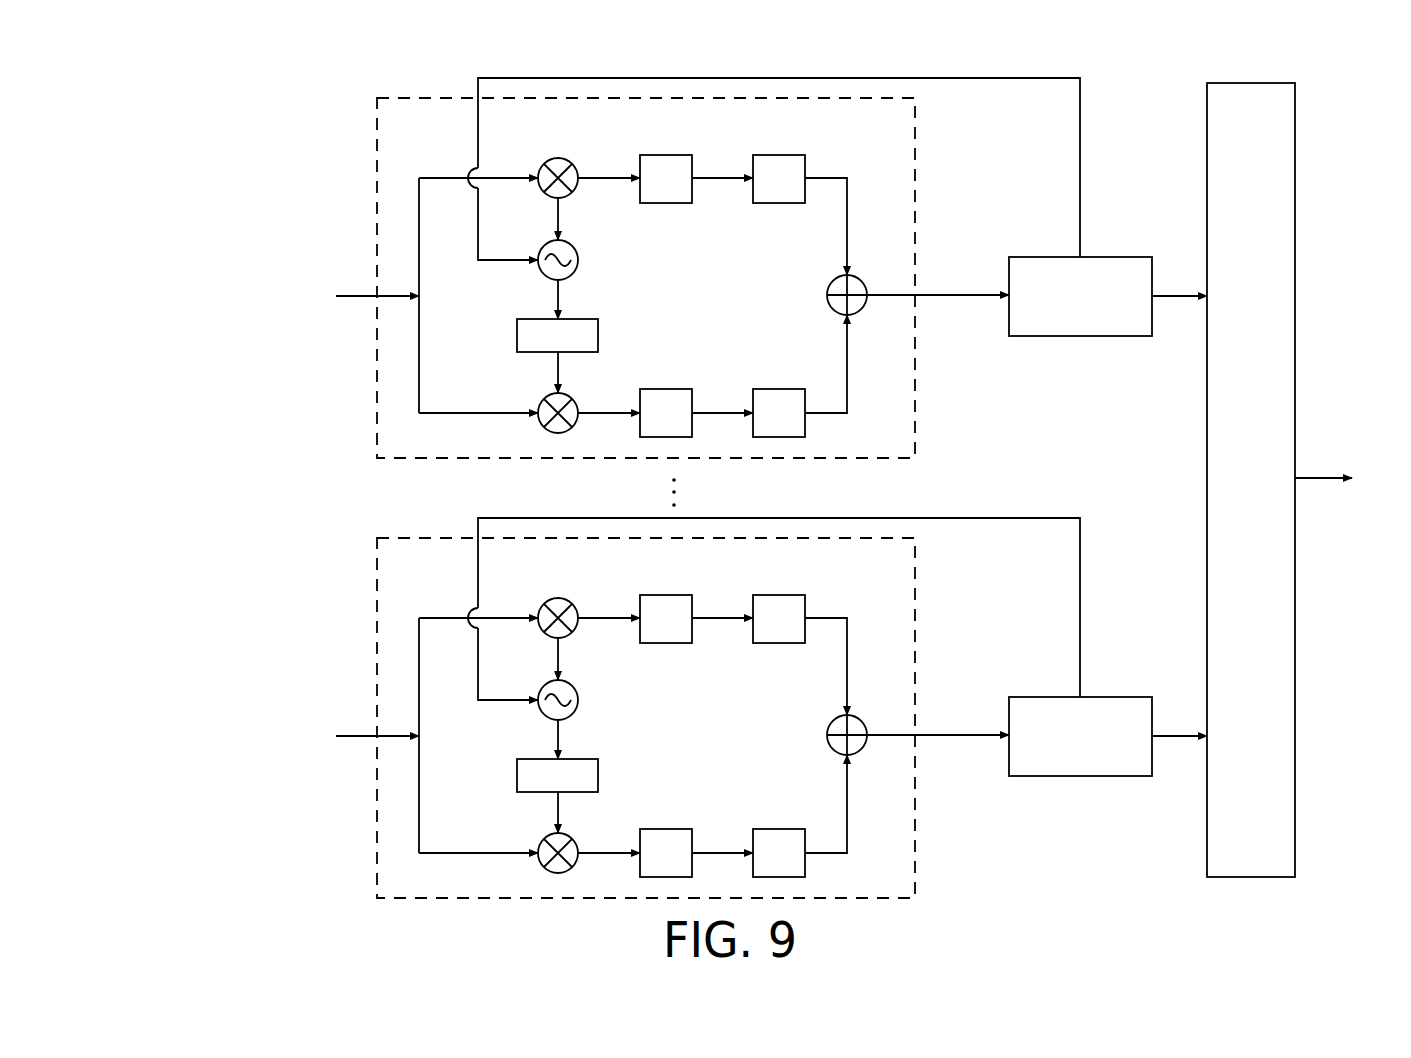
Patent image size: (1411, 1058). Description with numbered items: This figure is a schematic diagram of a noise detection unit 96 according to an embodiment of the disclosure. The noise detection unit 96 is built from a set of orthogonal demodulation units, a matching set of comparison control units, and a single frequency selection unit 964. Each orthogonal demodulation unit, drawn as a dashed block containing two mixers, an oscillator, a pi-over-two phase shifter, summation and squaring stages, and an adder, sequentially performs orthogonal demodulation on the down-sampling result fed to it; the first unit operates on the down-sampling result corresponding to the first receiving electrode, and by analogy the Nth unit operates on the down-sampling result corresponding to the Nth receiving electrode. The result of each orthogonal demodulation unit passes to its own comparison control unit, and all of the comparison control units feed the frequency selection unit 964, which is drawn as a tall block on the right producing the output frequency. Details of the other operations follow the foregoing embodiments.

The noise detection unit 96 is at (212, 122).
The frequency selection unit 964 is at (1275, 83).